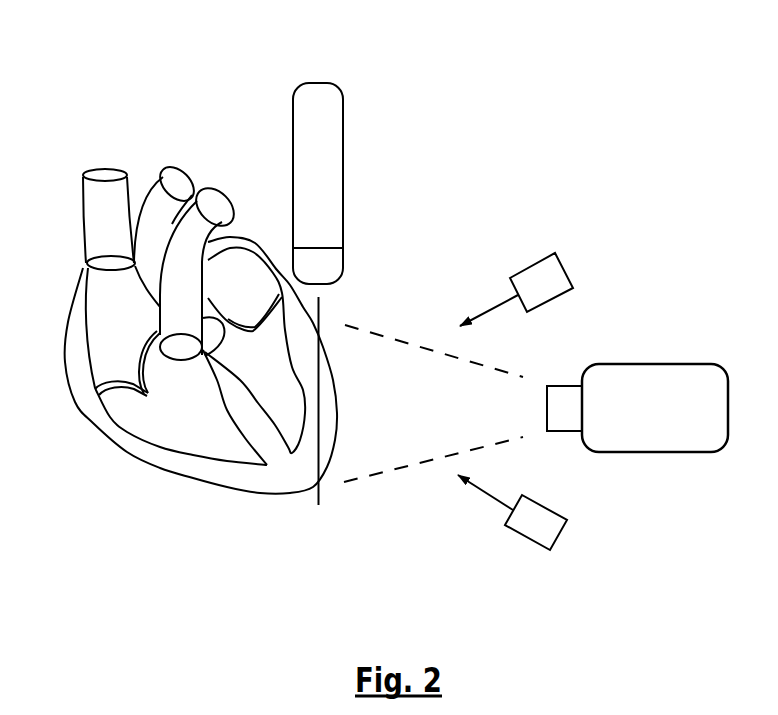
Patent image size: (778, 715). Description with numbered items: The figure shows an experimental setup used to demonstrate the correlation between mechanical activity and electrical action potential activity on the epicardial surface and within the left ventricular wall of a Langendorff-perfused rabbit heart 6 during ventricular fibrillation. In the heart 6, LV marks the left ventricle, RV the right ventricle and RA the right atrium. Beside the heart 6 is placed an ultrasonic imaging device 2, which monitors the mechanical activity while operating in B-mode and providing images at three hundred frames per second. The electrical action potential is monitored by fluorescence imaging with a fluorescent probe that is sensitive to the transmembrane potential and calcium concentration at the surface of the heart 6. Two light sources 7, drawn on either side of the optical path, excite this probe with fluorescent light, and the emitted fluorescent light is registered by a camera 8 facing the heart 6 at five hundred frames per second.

The ultrasonic imaging device 2 is at (272, 97).
The heart 6 is at (123, 457).
The light sources 7 is at (518, 258).
The camera 8 is at (698, 352).